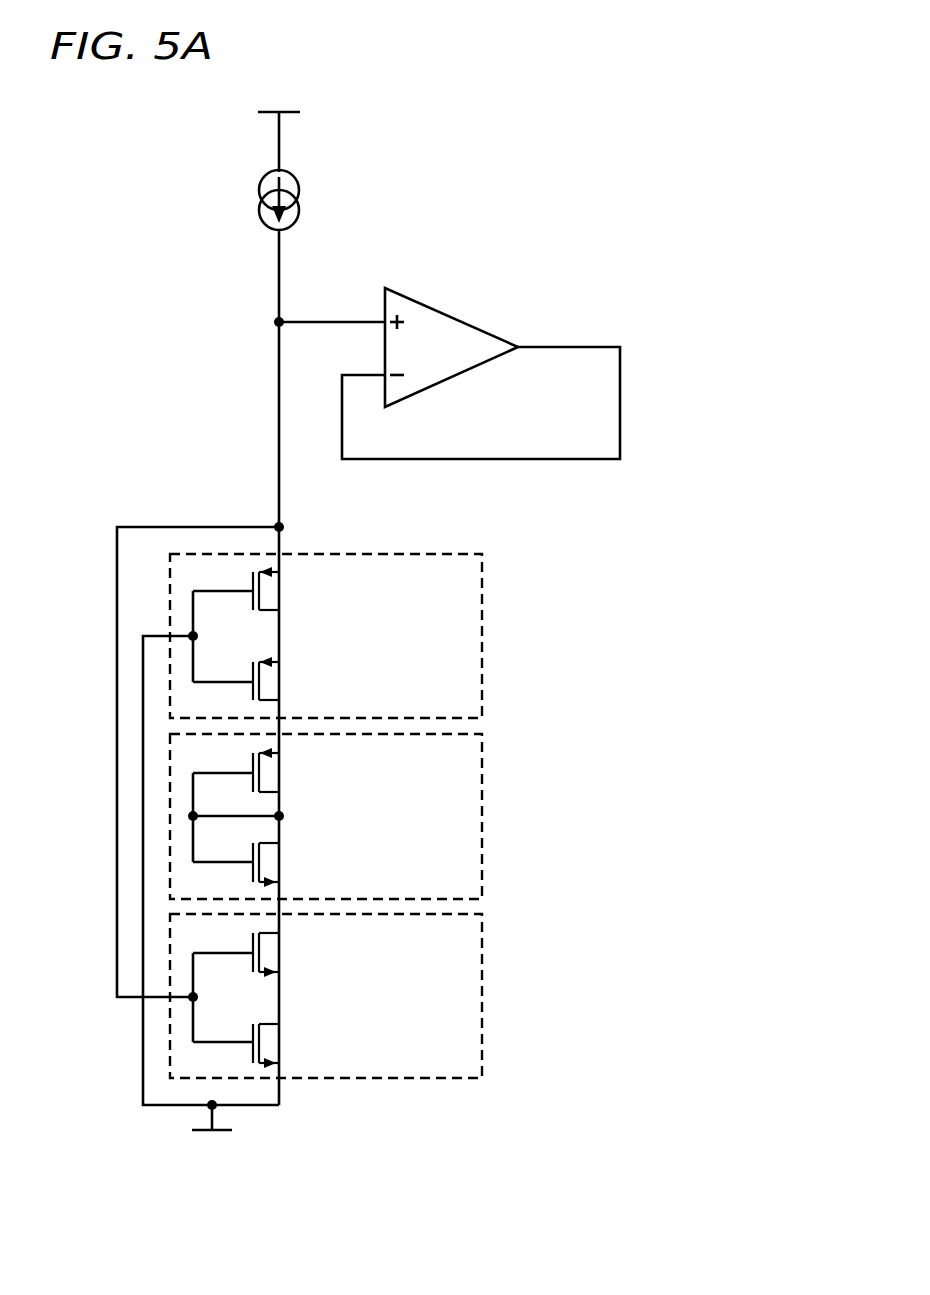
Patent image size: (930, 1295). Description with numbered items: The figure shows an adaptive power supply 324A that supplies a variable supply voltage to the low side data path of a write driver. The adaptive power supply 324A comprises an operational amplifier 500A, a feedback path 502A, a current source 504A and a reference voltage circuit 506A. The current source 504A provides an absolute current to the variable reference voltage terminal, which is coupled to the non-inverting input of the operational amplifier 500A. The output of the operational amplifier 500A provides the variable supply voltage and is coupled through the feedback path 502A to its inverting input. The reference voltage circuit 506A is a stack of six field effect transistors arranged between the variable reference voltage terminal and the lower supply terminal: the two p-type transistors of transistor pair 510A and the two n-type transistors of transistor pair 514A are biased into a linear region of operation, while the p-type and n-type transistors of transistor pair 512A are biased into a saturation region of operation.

The adaptive power supply 324A is at (524, 194).
The current source 504A is at (244, 201).
The operational amplifier 500A is at (455, 318).
The feedback path 502A is at (455, 461).
The reference voltage circuit 506A is at (80, 505).
The transistor pair 510A is at (484, 637).
The transistor pair 512A is at (484, 817).
The transistor pair 514A is at (484, 997).